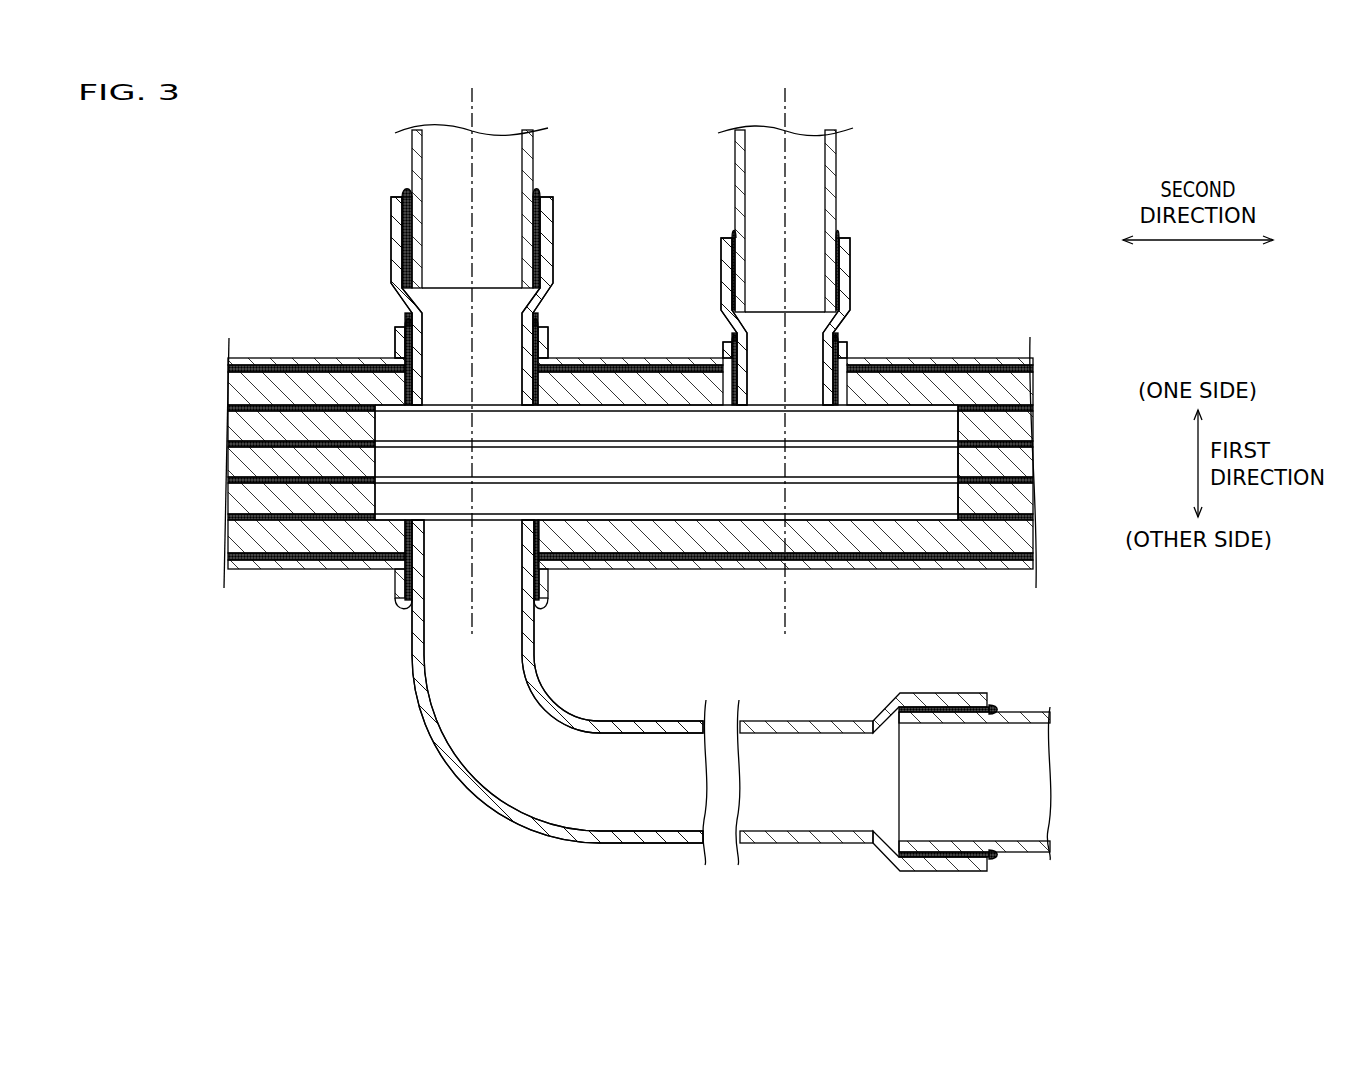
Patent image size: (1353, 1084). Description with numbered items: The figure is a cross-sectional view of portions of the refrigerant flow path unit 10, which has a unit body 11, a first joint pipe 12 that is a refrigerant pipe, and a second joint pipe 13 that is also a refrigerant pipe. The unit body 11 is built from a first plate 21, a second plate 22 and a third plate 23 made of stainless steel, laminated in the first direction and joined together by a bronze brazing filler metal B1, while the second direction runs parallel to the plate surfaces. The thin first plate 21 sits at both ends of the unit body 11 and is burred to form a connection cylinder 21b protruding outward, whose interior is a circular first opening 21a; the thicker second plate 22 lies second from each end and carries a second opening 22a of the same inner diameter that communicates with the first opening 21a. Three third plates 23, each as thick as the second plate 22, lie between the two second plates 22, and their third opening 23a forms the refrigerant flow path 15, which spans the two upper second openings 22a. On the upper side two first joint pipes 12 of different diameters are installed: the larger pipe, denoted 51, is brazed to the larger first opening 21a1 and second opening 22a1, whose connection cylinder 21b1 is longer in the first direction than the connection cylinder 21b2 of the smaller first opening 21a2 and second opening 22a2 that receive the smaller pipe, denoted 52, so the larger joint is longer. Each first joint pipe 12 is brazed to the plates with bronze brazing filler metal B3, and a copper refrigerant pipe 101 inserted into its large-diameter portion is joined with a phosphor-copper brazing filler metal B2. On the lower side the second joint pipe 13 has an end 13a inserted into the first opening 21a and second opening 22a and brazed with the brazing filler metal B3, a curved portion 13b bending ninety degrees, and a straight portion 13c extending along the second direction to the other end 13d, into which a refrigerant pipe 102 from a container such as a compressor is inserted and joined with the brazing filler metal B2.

The refrigerant flow path unit 10 is at (262, 226).
The unit body 11 is at (265, 607).
The first joint pipe 12 is at (378, 169).
The second joint pipe 13 is at (455, 753).
The end of second joint pipe 13a is at (404, 604).
The curved portion 13b is at (428, 713).
The straight portion 13c is at (655, 844).
The other end of second joint pipe 13d is at (945, 872).
The refrigerant flow path 15 is at (690, 498).
The first plate 21 is at (257, 358).
The first opening 21a is at (450, 358).
The first opening having larger diameter 21a1 is at (424, 286).
The first opening having smaller diameter 21a2 is at (752, 301).
The connection cylinder 21b is at (395, 343).
The connection cylinder forming larger first opening 21b1 is at (360, 312).
The connection cylinder forming smaller first opening 21b2 is at (686, 315).
The second plate 22 is at (235, 384).
The second opening 22a is at (537, 350).
The second opening having larger diameter 22a1 is at (593, 334).
The second opening having smaller diameter 22a2 is at (888, 318).
The third plate 23 is at (235, 423).
The third opening 23a is at (965, 441).
The first joint pipe having larger diameter 51 is at (430, 241).
The first joint pipe having smaller diameter 52 is at (833, 288).
The refrigerant pipe 101 is at (537, 163).
The refrigerant pipe 102 is at (1036, 853).
The brazing filler metal B1 is at (306, 370).
The brazing filler metal B2 is at (545, 239).
The brazing filler metal B3 is at (402, 372).